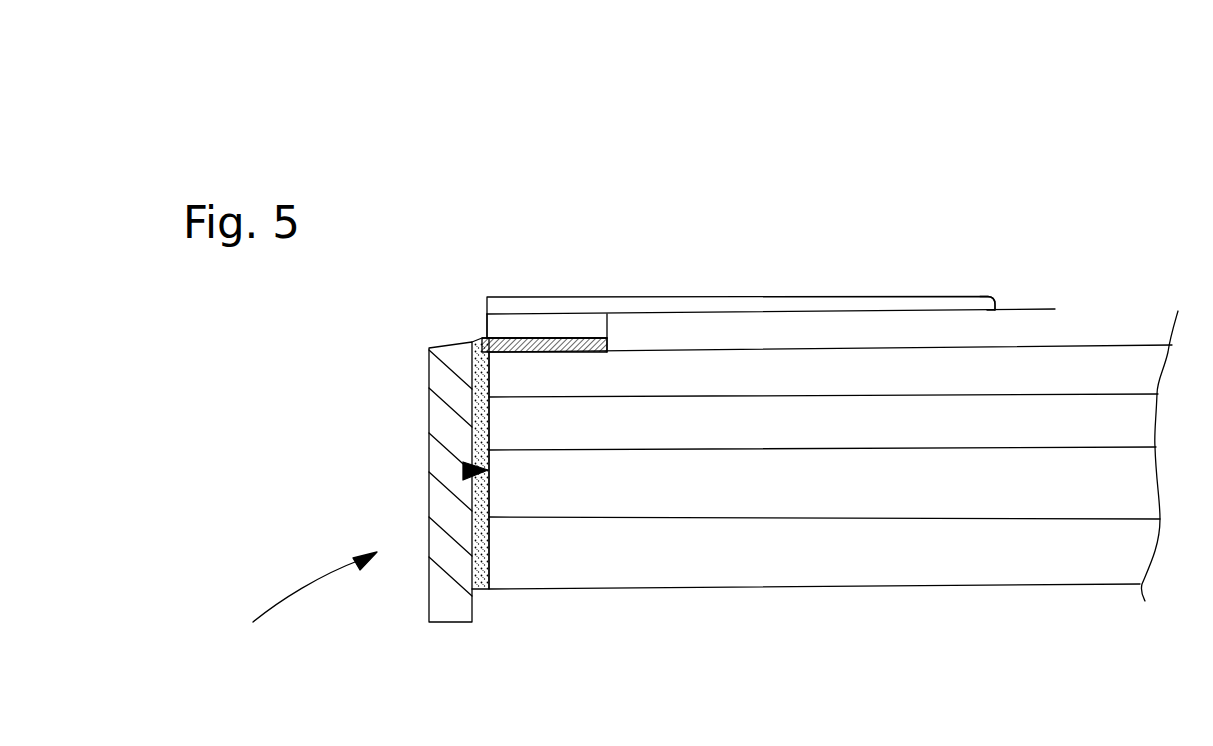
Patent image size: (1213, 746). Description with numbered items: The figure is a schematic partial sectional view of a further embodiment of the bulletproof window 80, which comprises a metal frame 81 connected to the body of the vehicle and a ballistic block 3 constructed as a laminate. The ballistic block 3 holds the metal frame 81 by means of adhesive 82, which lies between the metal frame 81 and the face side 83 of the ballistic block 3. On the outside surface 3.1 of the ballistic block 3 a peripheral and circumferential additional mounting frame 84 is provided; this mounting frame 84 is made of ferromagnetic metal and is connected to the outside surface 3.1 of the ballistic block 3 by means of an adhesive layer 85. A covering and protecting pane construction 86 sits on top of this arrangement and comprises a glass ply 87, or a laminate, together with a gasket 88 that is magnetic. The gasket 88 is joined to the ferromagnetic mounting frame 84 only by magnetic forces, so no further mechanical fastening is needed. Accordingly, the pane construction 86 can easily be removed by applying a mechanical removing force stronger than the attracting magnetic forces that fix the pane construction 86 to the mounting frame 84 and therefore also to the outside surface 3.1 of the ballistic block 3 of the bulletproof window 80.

The ballistic block 3 is at (593, 567).
The outside surface 3.1 is at (786, 350).
The bullet proof window 80 is at (315, 601).
The metal frame 81 is at (427, 366).
The adhesive 82 is at (478, 592).
The face side 83 is at (470, 472).
The additional mounting frame 84 is at (529, 336).
The adhesive layer 85 is at (574, 340).
The pane construction 86 is at (907, 297).
The glass ply 87 is at (982, 293).
The gasket 88 is at (487, 318).